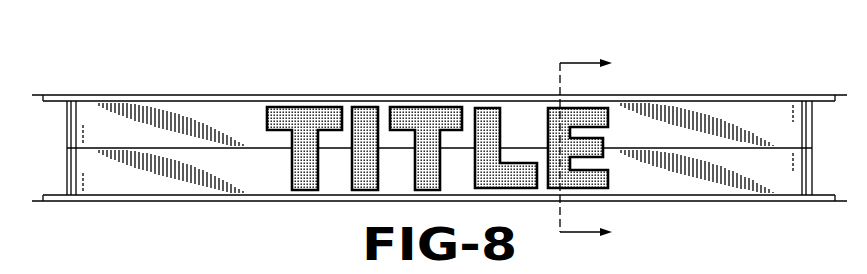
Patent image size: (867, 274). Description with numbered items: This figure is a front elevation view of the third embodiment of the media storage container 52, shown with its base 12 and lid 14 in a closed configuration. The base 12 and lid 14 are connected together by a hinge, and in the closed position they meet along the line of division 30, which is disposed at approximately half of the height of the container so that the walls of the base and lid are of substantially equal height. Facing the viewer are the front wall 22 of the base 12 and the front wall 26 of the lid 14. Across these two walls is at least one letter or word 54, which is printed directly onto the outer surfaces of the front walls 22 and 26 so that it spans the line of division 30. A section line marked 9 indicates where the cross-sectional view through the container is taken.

The lid 14 is at (140, 93).
The base 12 is at (140, 204).
The front wall of the lid 26 is at (235, 120).
The front wall of the base 22 is at (243, 168).
The letter or word 54 is at (417, 97).
The third embodiment of the media storage container 52 is at (694, 67).
The line of division 30 is at (741, 150).
The section line 9- 9 is at (594, 150).